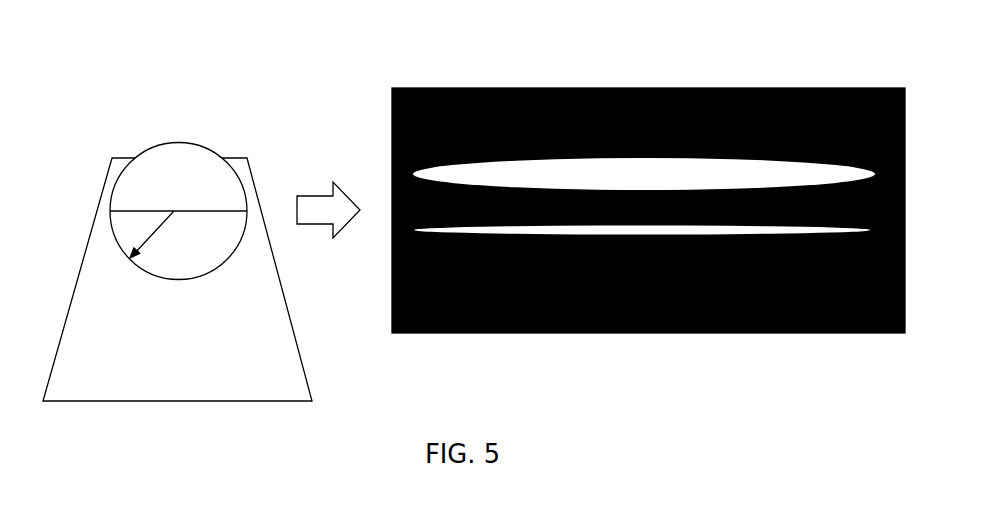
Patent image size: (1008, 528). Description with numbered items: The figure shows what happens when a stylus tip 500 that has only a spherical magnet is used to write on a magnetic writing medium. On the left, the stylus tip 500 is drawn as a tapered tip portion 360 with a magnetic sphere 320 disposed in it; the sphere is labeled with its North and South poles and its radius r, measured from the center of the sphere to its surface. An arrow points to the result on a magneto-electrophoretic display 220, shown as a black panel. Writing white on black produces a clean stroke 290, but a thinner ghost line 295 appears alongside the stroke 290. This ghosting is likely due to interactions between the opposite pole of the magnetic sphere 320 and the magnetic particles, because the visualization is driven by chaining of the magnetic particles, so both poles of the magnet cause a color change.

The stylus tip 500 is at (159, 293).
The tip portion 360 is at (74, 386).
The magnetic sphere 320 is at (227, 187).
The magneto-electrophoretic display 220 is at (648, 167).
The stroke 290 is at (629, 184).
The ghost lines 295 is at (688, 237).